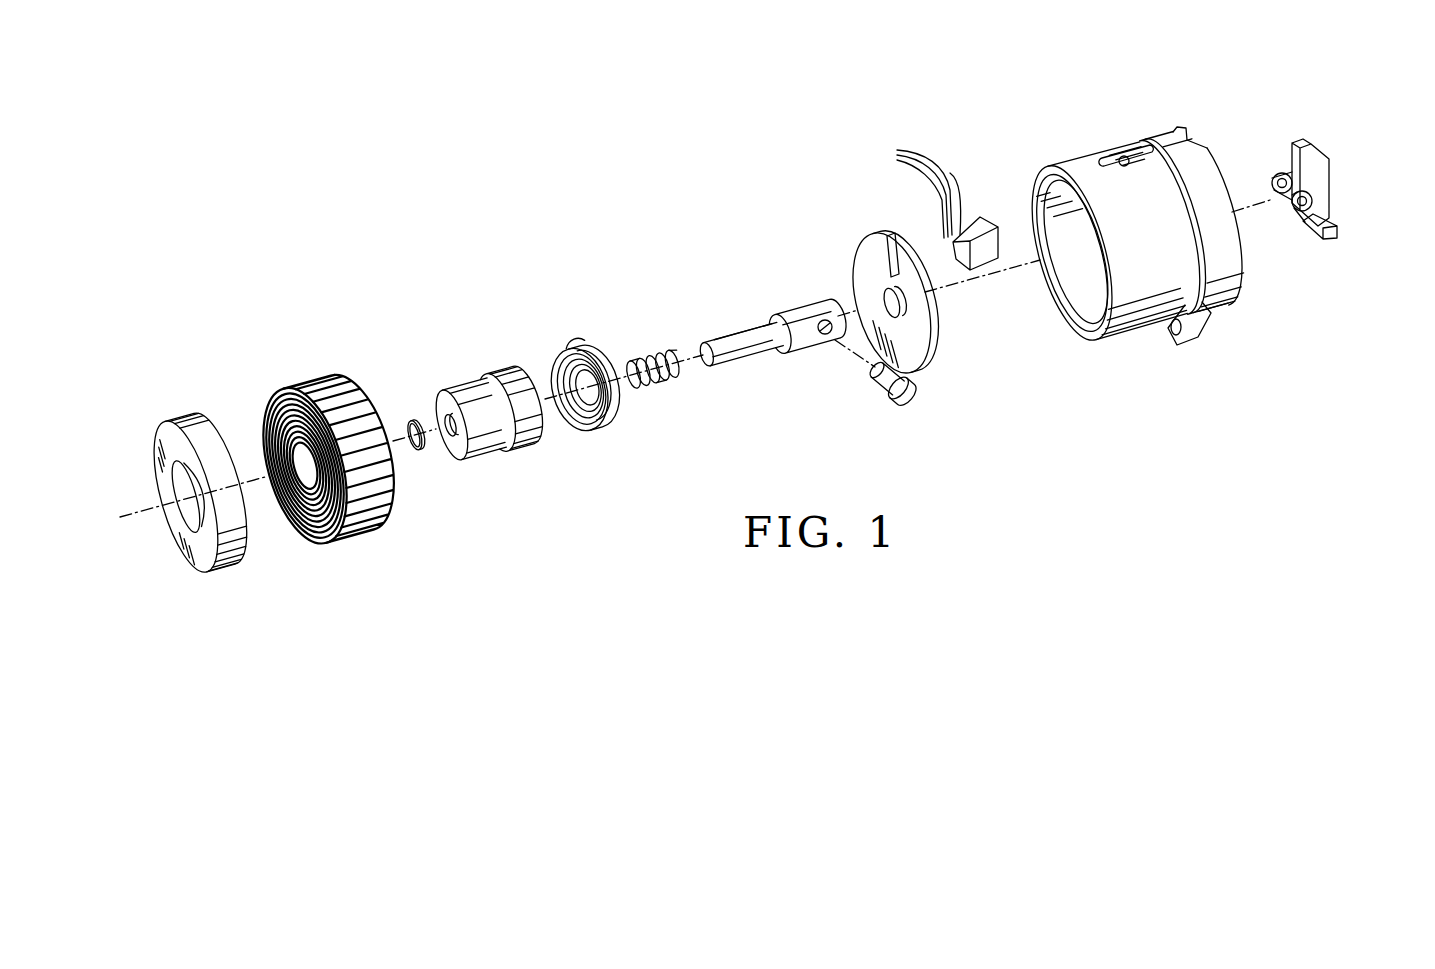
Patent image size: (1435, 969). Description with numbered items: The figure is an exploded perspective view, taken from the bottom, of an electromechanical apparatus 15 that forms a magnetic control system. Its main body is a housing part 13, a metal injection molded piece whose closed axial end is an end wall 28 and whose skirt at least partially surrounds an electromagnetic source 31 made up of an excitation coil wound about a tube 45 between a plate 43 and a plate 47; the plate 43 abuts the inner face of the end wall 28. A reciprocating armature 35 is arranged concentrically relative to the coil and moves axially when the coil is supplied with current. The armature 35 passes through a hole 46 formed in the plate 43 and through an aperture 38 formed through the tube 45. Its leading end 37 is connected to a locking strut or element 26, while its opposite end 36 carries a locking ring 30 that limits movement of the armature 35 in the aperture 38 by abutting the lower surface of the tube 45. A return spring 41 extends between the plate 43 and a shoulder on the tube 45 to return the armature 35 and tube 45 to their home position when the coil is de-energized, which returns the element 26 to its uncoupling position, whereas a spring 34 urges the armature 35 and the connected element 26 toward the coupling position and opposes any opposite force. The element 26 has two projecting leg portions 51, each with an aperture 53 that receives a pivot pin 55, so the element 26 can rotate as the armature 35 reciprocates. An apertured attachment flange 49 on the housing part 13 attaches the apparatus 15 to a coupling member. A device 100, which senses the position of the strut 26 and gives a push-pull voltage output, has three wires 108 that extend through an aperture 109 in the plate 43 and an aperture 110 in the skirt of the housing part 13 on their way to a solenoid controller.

The electromechanical apparatus 15 is at (1024, 95).
The housing part 13 is at (1098, 150).
The locking strut or element 26 is at (1338, 203).
The end wall 28 is at (1237, 302).
The locking ring 30 is at (417, 450).
The electromagnetic source 31 is at (348, 545).
The spring 34 is at (660, 385).
The reciprocating armature 35 is at (740, 370).
The opposite end of armature 36 is at (715, 330).
The leading end of armature 37 is at (822, 303).
The aperture 38 is at (453, 462).
The return spring 41 is at (605, 425).
The plate 43 is at (933, 332).
The tube 45 is at (505, 465).
The hole 46 is at (887, 295).
The plate 47 is at (222, 567).
The apertured attachment flange 49 is at (1183, 338).
The projecting leg portions 51 is at (1275, 172).
The aperture 53 is at (1280, 208).
The pivot pin 55 is at (918, 398).
The device 100 is at (982, 212).
The wires 108 is at (907, 191).
The aperture 109 is at (897, 275).
The aperture 110 is at (1128, 170).